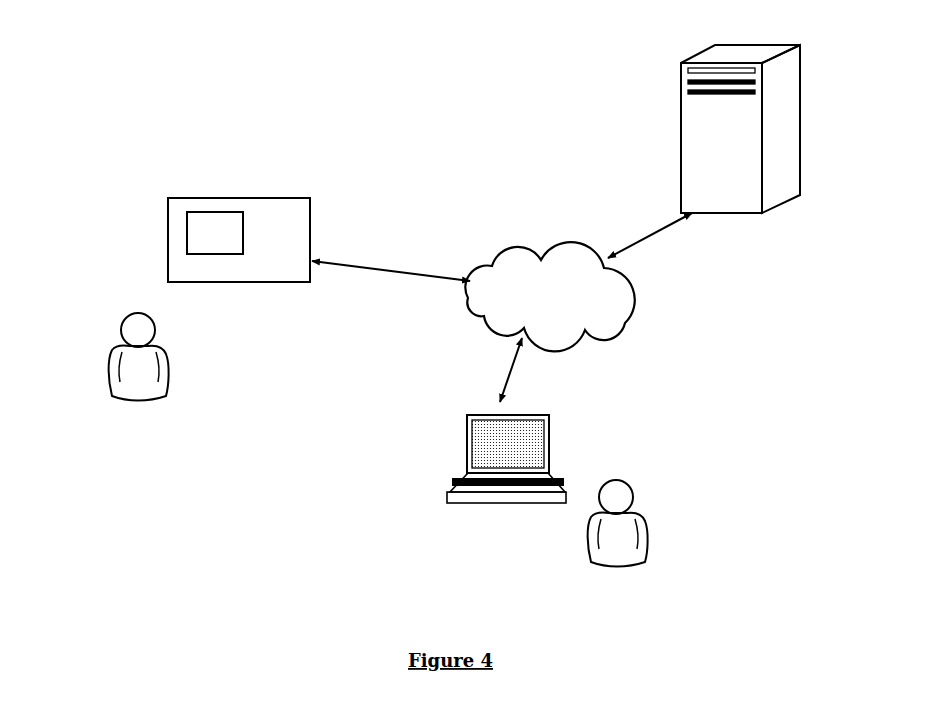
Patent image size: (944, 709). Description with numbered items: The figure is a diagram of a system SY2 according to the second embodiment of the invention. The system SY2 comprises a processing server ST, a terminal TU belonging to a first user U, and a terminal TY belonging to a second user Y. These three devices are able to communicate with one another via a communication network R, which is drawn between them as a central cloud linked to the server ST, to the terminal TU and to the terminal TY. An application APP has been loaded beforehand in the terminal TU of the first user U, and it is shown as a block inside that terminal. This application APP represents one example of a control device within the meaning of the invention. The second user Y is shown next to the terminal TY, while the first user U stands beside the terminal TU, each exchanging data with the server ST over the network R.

The system SY2 is at (256, 138).
The processing server ST is at (775, 43).
The terminal TU is at (179, 240).
The application APP is at (186, 222).
The first user U is at (163, 350).
The communication network R is at (549, 296).
The terminal TY is at (549, 440).
The second user Y is at (643, 518).